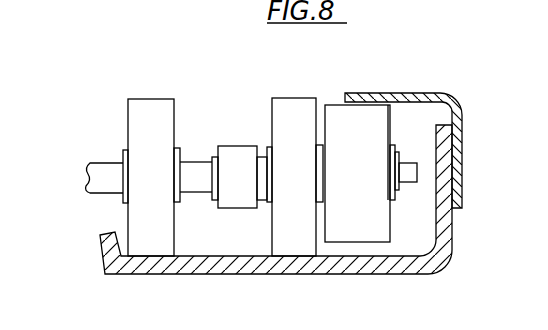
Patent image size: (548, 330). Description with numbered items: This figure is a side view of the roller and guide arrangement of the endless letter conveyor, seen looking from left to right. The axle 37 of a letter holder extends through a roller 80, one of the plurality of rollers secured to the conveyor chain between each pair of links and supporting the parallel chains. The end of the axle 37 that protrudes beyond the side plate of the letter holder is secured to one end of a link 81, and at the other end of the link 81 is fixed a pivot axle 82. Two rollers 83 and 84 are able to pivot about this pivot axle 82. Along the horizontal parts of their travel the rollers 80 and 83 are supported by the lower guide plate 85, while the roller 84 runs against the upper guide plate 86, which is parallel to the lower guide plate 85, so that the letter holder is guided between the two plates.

The axle 37 is at (93, 163).
The roller 80 is at (153, 98).
The link 81 is at (224, 145).
The pivot axle 82 is at (263, 147).
The roller 83 is at (297, 97).
The roller 84 is at (374, 221).
The lower guide plate 85 is at (331, 262).
The upper guide plate 86 is at (408, 93).